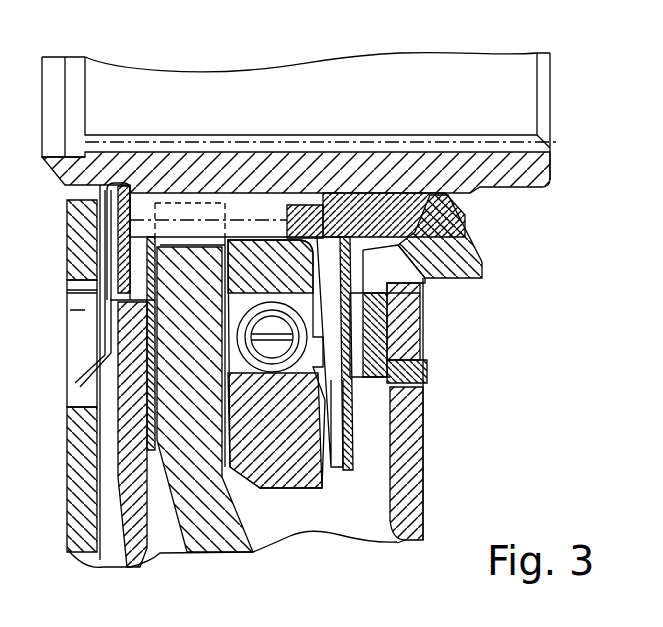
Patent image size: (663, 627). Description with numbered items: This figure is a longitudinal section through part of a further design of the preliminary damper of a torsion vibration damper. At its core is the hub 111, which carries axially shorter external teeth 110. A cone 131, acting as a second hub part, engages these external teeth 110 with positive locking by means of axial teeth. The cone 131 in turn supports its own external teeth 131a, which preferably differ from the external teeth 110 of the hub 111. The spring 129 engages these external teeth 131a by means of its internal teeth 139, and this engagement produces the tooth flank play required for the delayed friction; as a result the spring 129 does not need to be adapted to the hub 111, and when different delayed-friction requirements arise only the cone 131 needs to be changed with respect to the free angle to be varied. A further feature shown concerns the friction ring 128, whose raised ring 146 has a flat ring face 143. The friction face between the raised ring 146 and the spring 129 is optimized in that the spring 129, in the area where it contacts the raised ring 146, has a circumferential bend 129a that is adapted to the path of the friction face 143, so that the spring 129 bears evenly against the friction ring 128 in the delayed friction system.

The external teeth 110 is at (247, 203).
The hub 111 is at (209, 165).
The cone 131 is at (448, 225).
The external teeth 131a is at (314, 222).
The internal teeth 139 is at (400, 205).
The flat ring face 143 is at (420, 283).
The friction ring 128 is at (423, 302).
The raised ring 146 is at (420, 320).
The circumferential bend 129a is at (420, 358).
The spring 129 is at (420, 378).